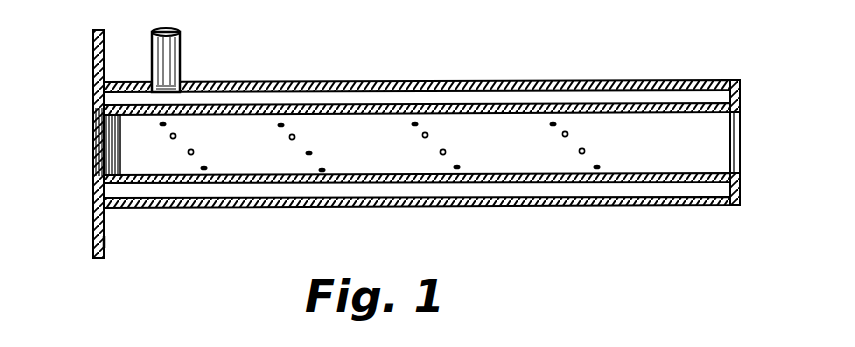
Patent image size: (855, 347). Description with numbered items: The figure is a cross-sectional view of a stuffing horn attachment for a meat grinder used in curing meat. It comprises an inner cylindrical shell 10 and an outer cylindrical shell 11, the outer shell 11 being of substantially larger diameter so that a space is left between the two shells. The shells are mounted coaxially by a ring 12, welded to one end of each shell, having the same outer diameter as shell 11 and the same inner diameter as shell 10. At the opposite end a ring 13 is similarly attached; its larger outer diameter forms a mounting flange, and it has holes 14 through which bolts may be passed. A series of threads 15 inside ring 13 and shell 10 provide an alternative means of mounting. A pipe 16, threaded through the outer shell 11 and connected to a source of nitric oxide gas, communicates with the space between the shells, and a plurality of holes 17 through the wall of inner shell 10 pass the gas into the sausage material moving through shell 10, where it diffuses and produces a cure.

The inner cylindrical shell 10 is at (679, 172).
The outer cylindrical shell 11 is at (665, 207).
The ring 12 is at (741, 94).
The ring 13 is at (104, 250).
The holes 14 is at (105, 242).
The threads 15 is at (93, 142).
The pipe 16 is at (181, 48).
The holes 17 is at (194, 152).